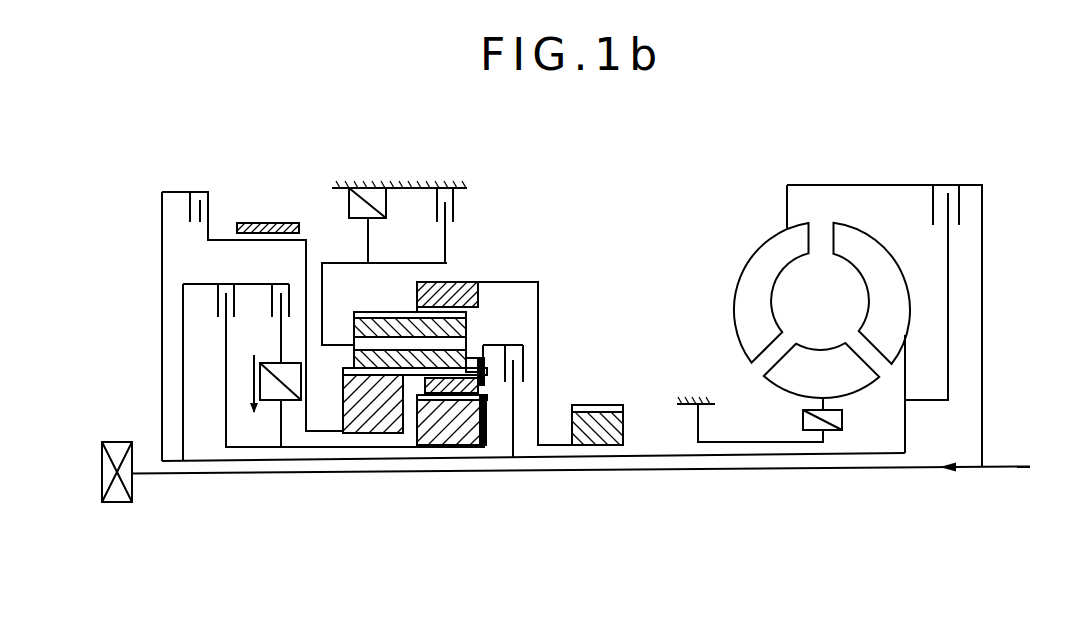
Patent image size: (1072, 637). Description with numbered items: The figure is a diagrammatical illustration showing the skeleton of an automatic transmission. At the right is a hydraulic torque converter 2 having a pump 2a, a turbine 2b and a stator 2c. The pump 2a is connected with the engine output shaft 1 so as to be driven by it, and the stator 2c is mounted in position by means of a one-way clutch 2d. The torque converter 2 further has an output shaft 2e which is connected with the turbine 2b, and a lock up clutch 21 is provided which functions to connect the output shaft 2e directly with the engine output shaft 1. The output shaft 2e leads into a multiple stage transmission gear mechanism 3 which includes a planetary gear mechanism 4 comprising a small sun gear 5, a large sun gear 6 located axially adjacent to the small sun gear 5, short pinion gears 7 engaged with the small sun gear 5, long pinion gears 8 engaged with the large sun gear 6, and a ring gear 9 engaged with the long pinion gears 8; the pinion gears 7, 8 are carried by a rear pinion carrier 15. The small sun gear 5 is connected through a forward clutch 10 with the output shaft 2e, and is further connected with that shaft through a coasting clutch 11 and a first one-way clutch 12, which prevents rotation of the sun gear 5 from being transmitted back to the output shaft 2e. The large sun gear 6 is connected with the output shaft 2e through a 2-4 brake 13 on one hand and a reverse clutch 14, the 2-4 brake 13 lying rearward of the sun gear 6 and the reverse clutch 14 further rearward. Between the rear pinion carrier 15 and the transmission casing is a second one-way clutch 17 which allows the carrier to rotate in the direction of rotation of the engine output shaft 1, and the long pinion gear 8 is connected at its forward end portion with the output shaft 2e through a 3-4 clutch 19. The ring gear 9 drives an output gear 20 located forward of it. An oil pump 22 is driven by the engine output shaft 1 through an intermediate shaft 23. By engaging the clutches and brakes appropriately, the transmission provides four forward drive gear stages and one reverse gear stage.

The engine output shaft 1 is at (1008, 468).
The hydraulic torque converter 2 is at (793, 319).
The pump 2a is at (768, 242).
The turbine 2b is at (885, 240).
The stator 2c is at (778, 377).
The one-way clutch 2d is at (802, 420).
The output shaft 2e is at (383, 462).
The multiple stage transmission gear mechanism 3 is at (262, 122).
The planetary gear mechanism 4 is at (556, 258).
The small sun gear 5 is at (436, 442).
The large sun gear 6 is at (429, 195).
The short pinion gears 7 is at (474, 367).
The long pinion gears 8 is at (356, 369).
The ring gear 9 is at (462, 292).
The forward clutch 10 is at (206, 301).
The coasting clutch 11 is at (261, 294).
The first one-way clutch 12 is at (262, 367).
The 2-4 brake 13 is at (275, 222).
The reverse clutch 14 is at (188, 184).
The rear pinion carrier 15 is at (323, 290).
The second one-way clutch 17 is at (349, 203).
The 3-4 clutch 19 is at (526, 360).
The output gear 20 is at (600, 437).
The lock up clutch 21 is at (962, 207).
The oil pump 22 is at (133, 480).
The intermediate shaft 23 is at (542, 470).